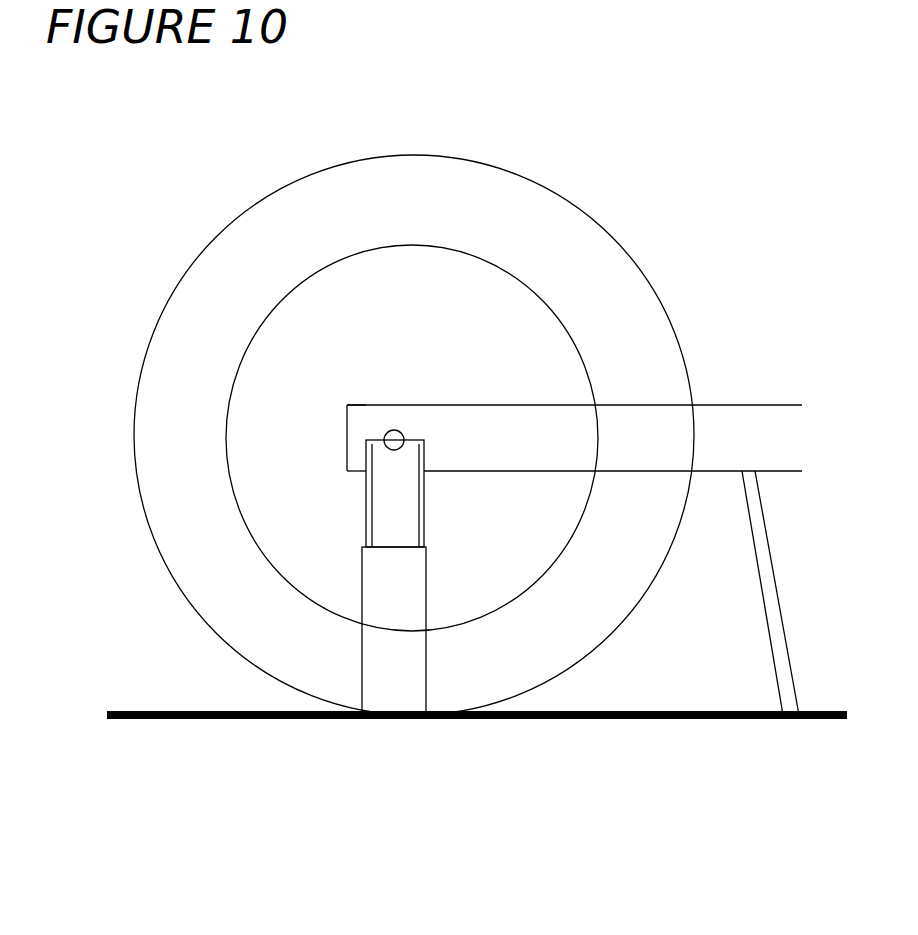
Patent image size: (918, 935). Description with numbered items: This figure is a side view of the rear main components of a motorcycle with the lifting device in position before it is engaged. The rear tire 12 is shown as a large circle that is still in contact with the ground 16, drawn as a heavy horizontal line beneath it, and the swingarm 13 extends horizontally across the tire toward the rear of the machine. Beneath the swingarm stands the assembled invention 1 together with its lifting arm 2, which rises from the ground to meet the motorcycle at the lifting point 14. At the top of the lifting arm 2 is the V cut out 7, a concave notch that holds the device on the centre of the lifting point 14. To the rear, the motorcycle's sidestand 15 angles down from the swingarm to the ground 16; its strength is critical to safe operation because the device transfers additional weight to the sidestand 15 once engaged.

The assembled invention 1 is at (383, 628).
The lifting arm 2 is at (388, 493).
The V cut out 7 is at (410, 442).
The tire 12 is at (573, 257).
The swingarm 13 is at (753, 433).
The lifting point 14 is at (385, 432).
The sidestand 15 is at (778, 623).
The ground 16 is at (593, 718).